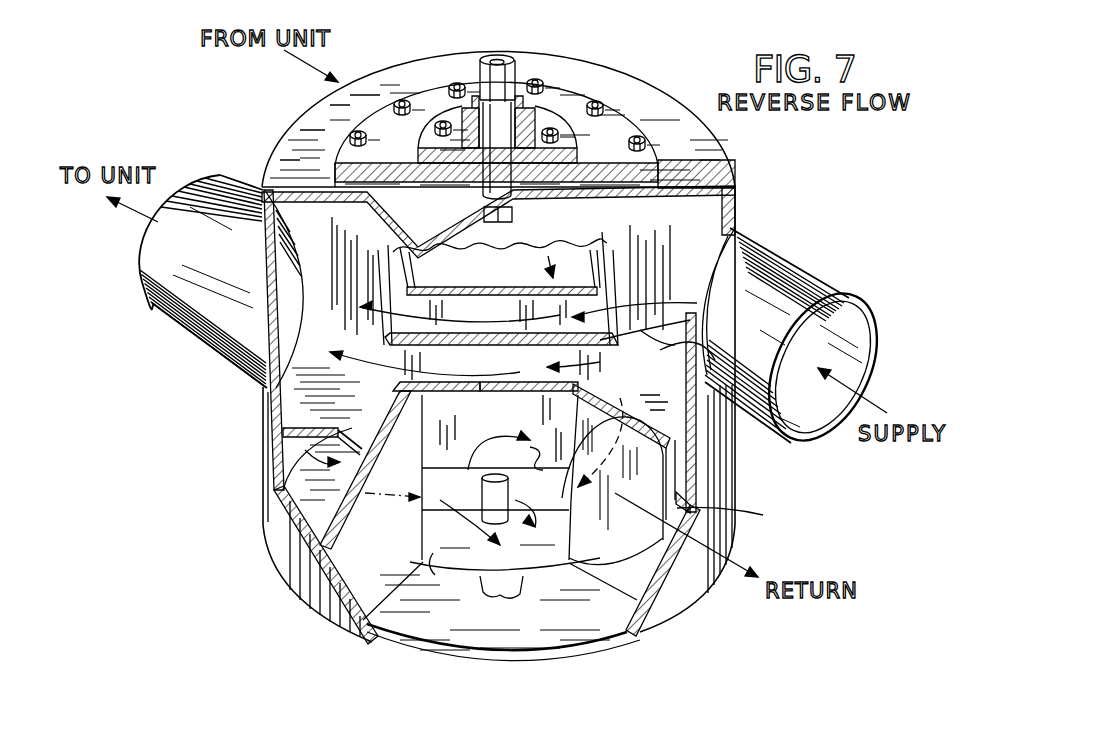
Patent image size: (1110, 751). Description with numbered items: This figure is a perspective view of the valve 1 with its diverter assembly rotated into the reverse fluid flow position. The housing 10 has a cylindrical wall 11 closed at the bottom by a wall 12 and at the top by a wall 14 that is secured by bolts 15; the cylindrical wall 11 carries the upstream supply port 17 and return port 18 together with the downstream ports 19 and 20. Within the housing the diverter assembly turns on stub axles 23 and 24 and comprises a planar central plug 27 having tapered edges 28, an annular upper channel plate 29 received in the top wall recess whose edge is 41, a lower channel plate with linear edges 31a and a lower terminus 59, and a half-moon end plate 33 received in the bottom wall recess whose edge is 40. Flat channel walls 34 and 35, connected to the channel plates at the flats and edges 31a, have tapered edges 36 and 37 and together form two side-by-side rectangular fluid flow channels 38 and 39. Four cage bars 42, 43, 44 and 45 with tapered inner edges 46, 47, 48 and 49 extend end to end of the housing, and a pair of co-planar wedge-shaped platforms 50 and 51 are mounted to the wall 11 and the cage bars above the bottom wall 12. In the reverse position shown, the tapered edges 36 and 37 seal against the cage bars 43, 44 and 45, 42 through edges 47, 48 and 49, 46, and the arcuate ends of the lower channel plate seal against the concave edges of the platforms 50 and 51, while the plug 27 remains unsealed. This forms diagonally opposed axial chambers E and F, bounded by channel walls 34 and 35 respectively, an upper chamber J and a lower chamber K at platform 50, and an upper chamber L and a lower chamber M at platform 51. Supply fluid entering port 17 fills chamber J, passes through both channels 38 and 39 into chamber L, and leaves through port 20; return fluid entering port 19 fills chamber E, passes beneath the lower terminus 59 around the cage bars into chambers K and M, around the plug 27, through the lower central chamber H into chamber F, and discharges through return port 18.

The valve 1 is at (677, 60).
The housing 10 is at (737, 490).
The cylindrical wall 11 is at (723, 472).
The wall 12 is at (574, 626).
The wall 14 is at (622, 82).
The bolts 15 is at (360, 128).
The supply port 17 is at (880, 327).
The return port 18 is at (692, 585).
The downstream port 19 is at (420, 58).
The downstream port 20 is at (207, 350).
The stub axle 23 is at (490, 520).
The stub axle 24 is at (498, 60).
The central plug 27 is at (397, 383).
The tapered edges 28 is at (355, 334).
The upper channel plate 29 is at (433, 223).
The opposed edges 31a is at (450, 510).
The end plate 33 is at (560, 582).
The channel wall 34 is at (482, 308).
The channel wall 35 is at (458, 452).
The tapered edges 36 is at (410, 283).
The tapered edges 37 is at (395, 448).
The fluid flow channel 38 is at (512, 330).
The fluid flow channel 39 is at (524, 392).
The recess edge 40 is at (466, 585).
The recess edge 41 is at (658, 170).
The cage bar 42 is at (626, 583).
The cage bar 43 is at (585, 290).
The cage bar 44 is at (380, 300).
The cage bar 45 is at (382, 579).
The tapered inner edge 46 is at (565, 507).
The tapered inner edge 47 is at (603, 262).
The tapered inner edge 48 is at (462, 278).
The tapered inner edge 49 is at (438, 572).
The platform 50 is at (677, 390).
The platform 51 is at (278, 400).
The lower terminus 59 is at (505, 450).
The chamber E is at (614, 288).
The chamber F is at (505, 625).
The lower central chamber H is at (437, 525).
The upper chamber J is at (650, 370).
The lower chamber K is at (737, 512).
The upper chamber L is at (328, 393).
The lower chamber M is at (325, 472).